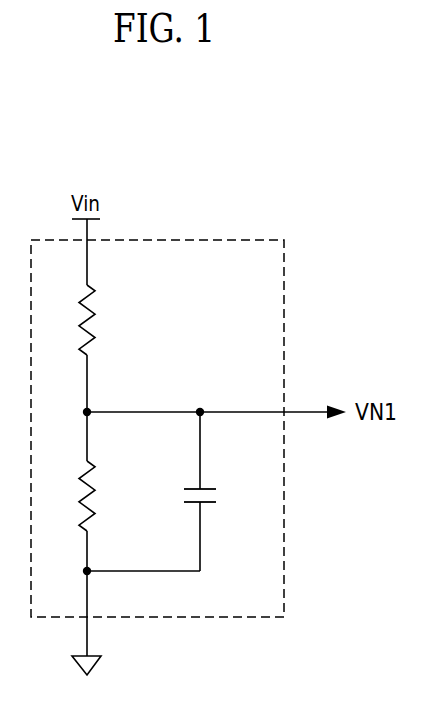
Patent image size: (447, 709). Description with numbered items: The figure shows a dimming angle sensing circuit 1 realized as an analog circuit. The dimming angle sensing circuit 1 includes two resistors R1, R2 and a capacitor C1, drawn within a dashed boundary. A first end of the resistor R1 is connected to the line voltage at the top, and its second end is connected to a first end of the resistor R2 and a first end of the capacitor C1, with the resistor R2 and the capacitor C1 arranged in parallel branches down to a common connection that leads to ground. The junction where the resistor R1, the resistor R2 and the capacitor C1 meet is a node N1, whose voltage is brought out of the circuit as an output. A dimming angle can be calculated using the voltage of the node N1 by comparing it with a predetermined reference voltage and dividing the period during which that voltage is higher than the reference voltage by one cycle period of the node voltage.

The dimming angle sensing circuit 1 is at (285, 281).
The resistor R1 is at (103, 320).
The resistor R2 is at (104, 496).
The capacitor C1 is at (216, 489).
The node N1 is at (102, 397).